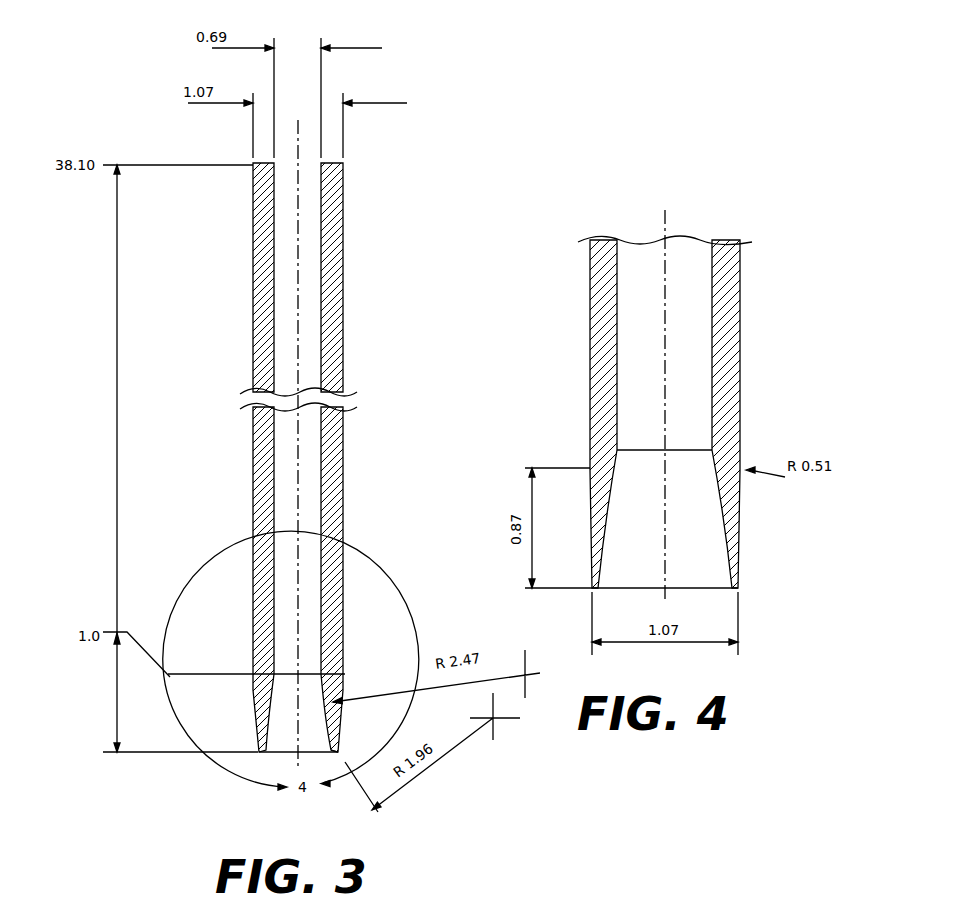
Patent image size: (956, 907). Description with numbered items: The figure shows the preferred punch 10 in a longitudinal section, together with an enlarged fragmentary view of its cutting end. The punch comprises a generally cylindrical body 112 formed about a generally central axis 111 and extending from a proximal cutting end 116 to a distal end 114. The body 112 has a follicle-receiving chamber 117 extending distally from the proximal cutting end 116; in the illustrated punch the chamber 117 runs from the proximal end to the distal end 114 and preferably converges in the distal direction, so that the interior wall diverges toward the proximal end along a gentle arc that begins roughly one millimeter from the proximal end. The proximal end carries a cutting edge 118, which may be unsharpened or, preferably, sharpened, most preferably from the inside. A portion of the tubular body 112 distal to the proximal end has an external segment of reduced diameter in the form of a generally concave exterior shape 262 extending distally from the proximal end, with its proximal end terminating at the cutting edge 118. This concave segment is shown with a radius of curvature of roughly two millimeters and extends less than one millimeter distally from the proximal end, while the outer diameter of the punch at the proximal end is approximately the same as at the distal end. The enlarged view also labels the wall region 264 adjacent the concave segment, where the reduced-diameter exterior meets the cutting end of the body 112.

In FIG. 3, the needle 10 is at (378, 258).
In FIG. 3, the central axis 111 is at (298, 143).
In FIG. 3, the body 112 is at (345, 465).
In FIG. 3, the distal end 114 is at (343, 207).
In FIG. 3, the proximal cutting end 116 is at (340, 750).
In FIG. 3, the follicle-receiving chamber 117 is at (298, 742).
In FIG. 4, the cutting edge 118 is at (740, 588).
In FIG. 3, the concave exterior shape 262 is at (352, 678).
In FIG. 4, the concave exterior shape 262 is at (582, 546).
In FIG. 4, the tapered outer wall 264 is at (715, 533).